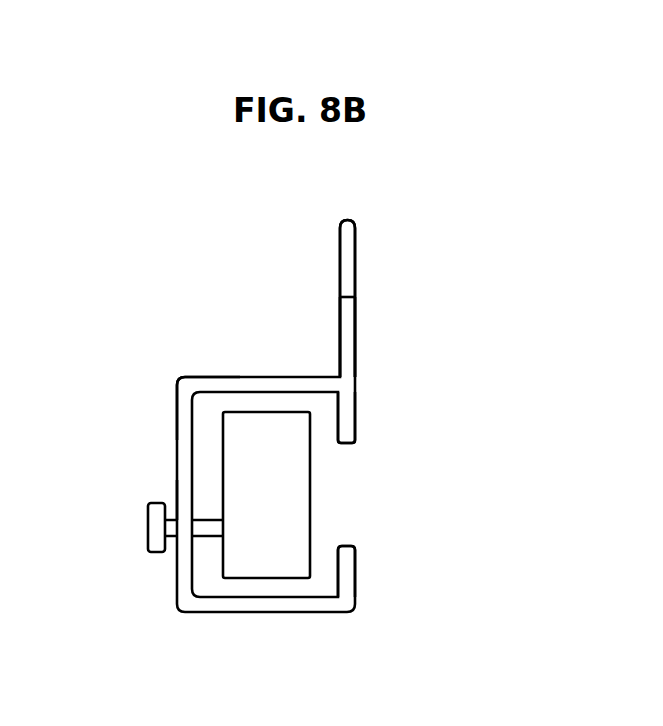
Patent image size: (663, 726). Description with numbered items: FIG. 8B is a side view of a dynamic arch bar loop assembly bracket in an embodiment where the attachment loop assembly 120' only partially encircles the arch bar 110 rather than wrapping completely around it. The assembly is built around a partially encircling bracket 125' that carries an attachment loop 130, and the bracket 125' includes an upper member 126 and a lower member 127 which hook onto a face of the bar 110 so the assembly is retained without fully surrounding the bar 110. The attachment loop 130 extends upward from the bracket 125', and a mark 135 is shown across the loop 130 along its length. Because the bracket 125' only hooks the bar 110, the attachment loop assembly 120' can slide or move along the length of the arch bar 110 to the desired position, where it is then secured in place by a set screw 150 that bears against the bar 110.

The inner member / panel 110 is at (262, 562).
The bracket body 120' is at (341, 435).
The upper wall of bracket 125' is at (181, 379).
The upper lip 126 is at (348, 425).
The lower lip 127 is at (350, 566).
The arm 130 is at (356, 241).
The arm segment mark 135 is at (341, 326).
The fastener 150 is at (148, 530).